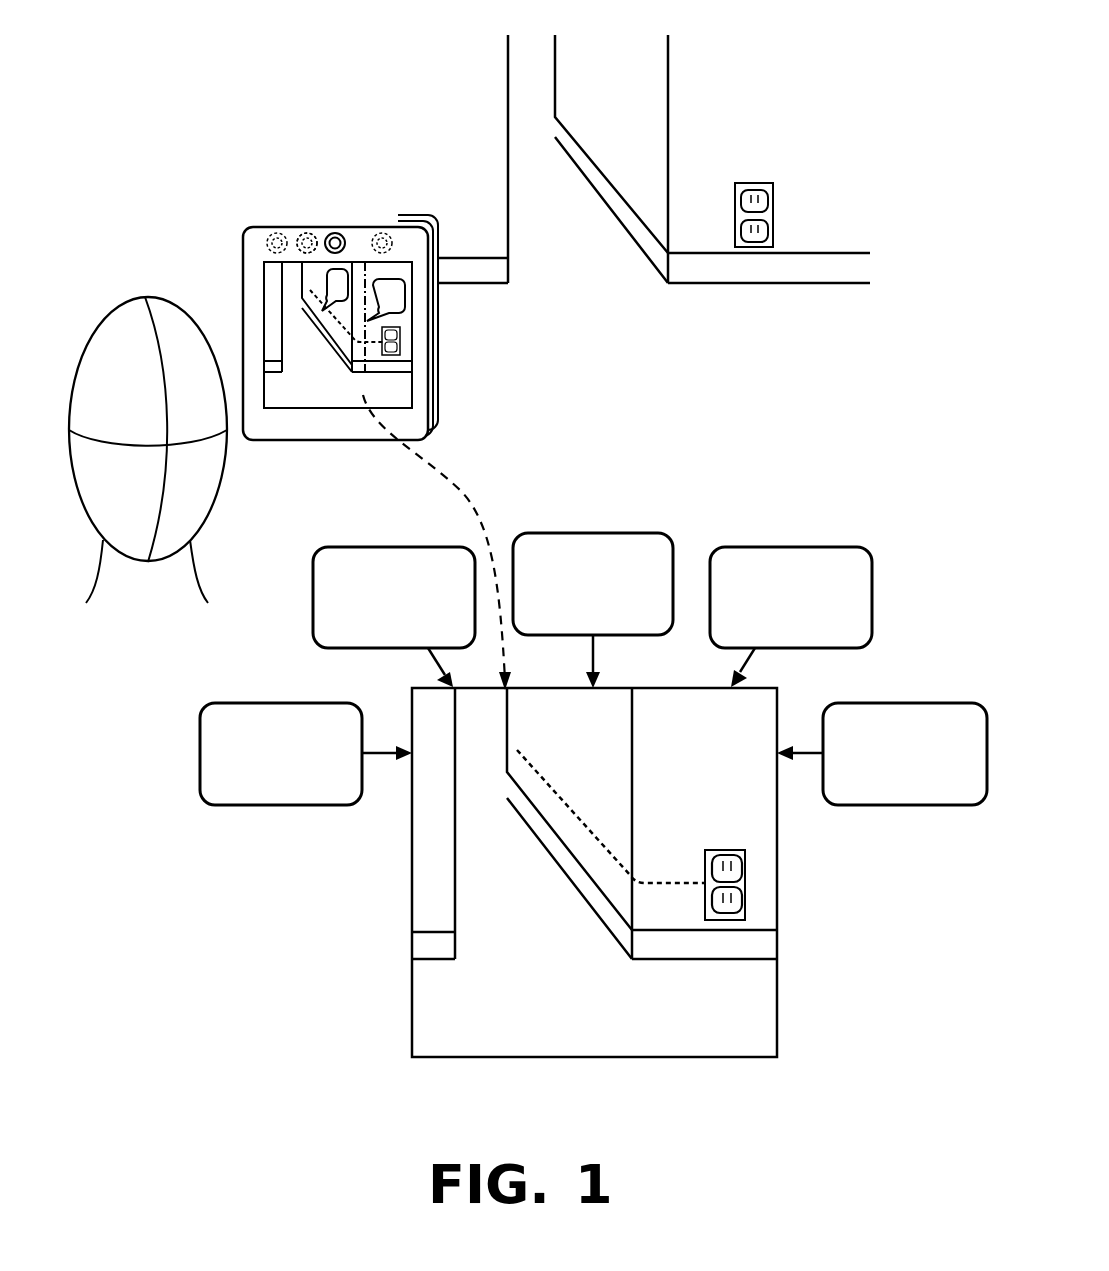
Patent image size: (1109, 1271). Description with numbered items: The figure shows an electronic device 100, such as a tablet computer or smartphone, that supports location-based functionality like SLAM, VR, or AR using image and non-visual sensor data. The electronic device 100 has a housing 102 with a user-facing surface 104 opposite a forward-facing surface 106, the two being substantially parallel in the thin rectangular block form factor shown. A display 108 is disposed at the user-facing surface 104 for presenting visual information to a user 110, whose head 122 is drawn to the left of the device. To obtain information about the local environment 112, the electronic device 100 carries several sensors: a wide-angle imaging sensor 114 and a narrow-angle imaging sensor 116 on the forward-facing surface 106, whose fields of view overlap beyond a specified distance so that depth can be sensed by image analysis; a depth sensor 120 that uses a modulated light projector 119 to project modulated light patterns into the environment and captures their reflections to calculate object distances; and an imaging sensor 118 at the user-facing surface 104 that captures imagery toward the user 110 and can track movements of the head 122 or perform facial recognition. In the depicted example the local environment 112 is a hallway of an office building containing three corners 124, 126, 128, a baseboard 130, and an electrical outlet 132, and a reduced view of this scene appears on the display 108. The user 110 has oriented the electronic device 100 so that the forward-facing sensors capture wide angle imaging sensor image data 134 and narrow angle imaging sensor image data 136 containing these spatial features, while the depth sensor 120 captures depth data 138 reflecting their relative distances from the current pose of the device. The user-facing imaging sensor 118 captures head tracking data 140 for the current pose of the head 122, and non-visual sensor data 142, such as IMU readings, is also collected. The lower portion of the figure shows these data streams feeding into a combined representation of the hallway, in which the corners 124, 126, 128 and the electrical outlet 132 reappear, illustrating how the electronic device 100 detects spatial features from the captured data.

The electronic device 100 is at (351, 435).
The housing 102 is at (433, 342).
The surface 104 is at (305, 437).
The surface 106 is at (450, 412).
The display 108 is at (403, 404).
The user 110 is at (137, 610).
The local environment 112 is at (641, 497).
The wide-angle imaging sensor 114 is at (268, 236).
The narrow-angle imaging sensor 116 is at (390, 234).
The imaging sensor 118 is at (346, 234).
The modulated light projector 119 is at (313, 233).
The depth sensor 120 is at (293, 230).
The head 122 is at (110, 307).
The corner 124 is at (508, 243).
The corner 126 is at (668, 116).
The corner 128 is at (555, 82).
The baseboard 130 is at (645, 237).
The electrical outlet 132 is at (773, 208).
The wide angle imaging sensor image data 134 is at (271, 703).
The narrow angle imaging sensor image data 136 is at (396, 547).
The depth data 138 is at (598, 533).
The head tracking data 140 is at (791, 547).
The non-visual sensor data 142 is at (913, 703).